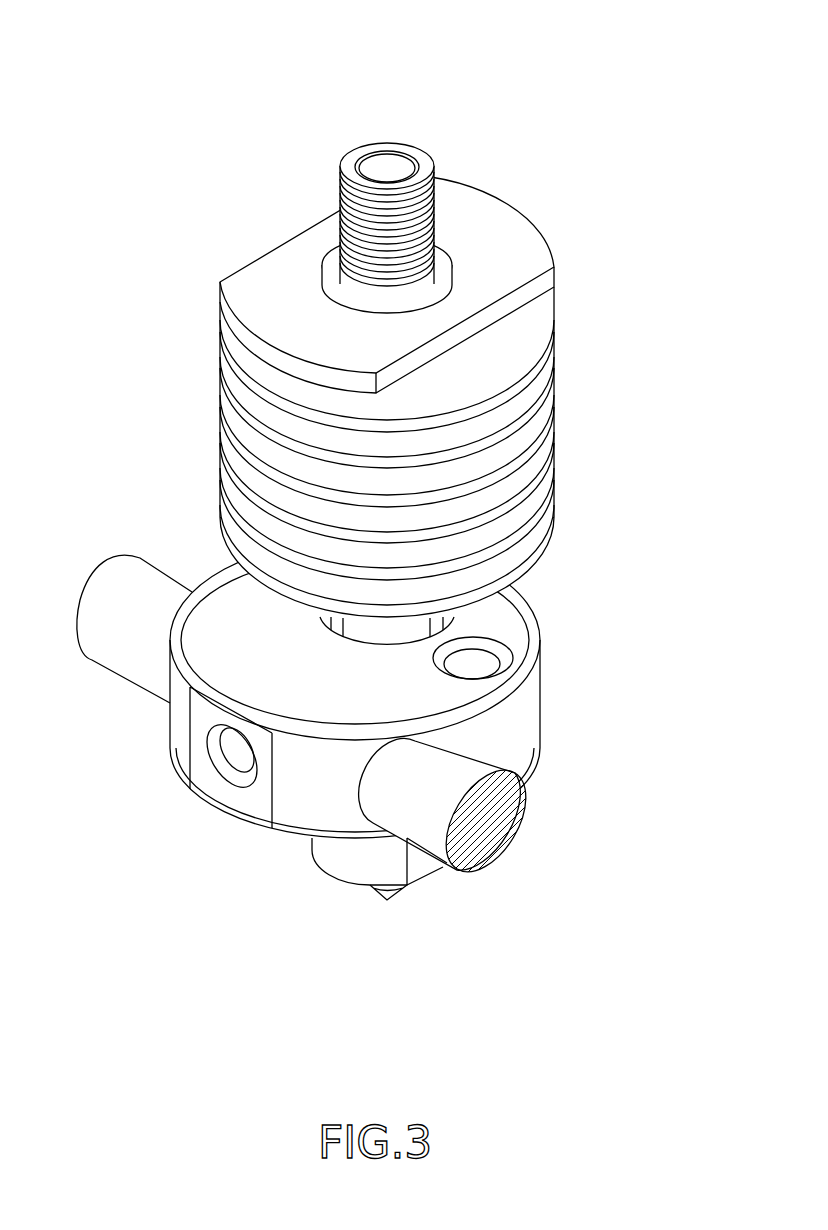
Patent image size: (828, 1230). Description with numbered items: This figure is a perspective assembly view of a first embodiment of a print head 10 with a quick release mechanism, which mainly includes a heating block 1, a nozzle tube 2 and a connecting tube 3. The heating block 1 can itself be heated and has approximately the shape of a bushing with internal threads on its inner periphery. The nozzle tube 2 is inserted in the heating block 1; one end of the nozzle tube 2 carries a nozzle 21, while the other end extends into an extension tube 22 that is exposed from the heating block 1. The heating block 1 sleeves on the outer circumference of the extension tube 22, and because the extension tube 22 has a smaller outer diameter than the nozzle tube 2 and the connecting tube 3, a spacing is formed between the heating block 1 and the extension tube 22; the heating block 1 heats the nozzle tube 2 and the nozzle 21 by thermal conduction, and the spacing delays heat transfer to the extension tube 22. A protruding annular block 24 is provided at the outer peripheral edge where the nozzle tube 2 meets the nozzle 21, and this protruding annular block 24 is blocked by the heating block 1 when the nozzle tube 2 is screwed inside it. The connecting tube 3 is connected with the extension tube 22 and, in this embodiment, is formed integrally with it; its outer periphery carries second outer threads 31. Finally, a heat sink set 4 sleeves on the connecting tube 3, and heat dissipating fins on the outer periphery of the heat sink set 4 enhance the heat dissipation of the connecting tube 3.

The print head 10 is at (288, 27).
The heating block 1 is at (548, 652).
The nozzle tube 2 is at (330, 915).
The nozzle 21 is at (388, 898).
The extension tube 22 is at (383, 628).
The protruding annular block 24 is at (360, 863).
The connecting tube 3 is at (438, 212).
The second outer threads 31 is at (437, 216).
The heat sink set 4 is at (503, 358).